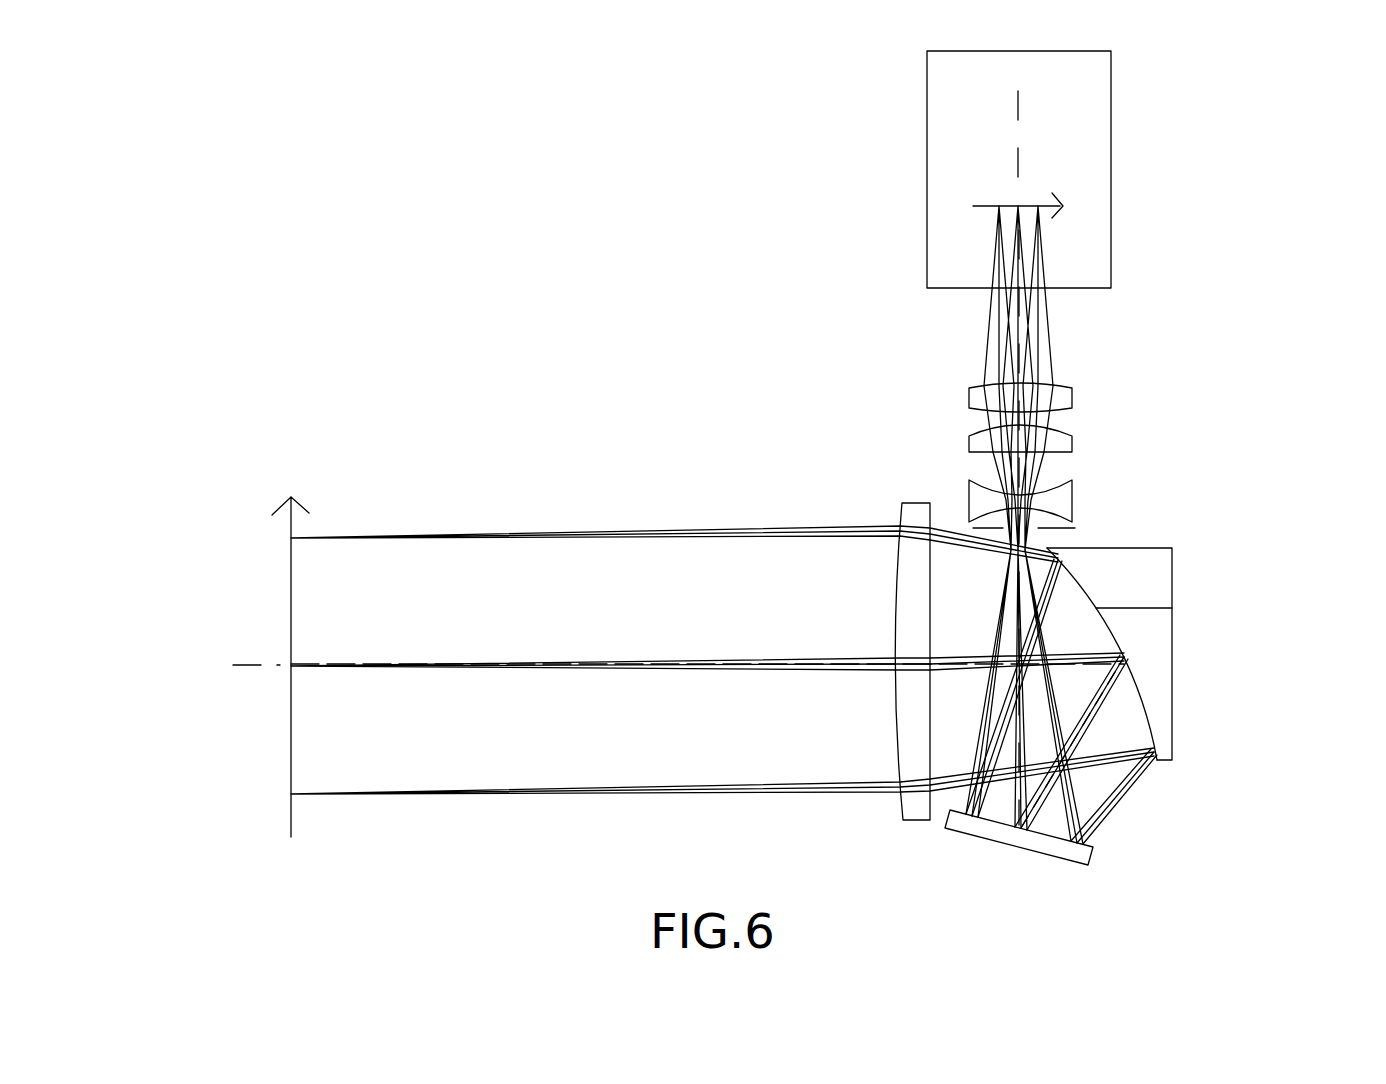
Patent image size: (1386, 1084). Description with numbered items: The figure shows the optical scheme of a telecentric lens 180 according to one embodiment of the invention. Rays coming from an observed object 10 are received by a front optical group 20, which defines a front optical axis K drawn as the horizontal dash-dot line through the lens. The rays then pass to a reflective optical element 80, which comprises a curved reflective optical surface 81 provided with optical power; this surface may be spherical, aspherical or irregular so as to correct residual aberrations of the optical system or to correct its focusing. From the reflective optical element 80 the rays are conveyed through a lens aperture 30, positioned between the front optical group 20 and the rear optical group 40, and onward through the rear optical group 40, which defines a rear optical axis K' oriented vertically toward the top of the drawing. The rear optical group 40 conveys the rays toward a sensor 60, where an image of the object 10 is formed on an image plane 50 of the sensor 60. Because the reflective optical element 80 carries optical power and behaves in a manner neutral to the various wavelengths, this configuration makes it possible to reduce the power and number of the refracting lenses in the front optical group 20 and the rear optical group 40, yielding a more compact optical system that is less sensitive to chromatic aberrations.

The telecentric lens 180 is at (378, 303).
The sensor 60 is at (927, 96).
The image plane 50 is at (985, 206).
The rear optical axis K' is at (1102, 454).
The front optical axis K is at (650, 622).
The rear optical group 40 is at (1091, 503).
The lens aperture 30 is at (1075, 527).
The curved reflective optical surface 81 is at (1172, 608).
The reflective optical element 80 is at (1172, 678).
The front optical group 20 is at (918, 503).
The observed object 10 is at (291, 565).